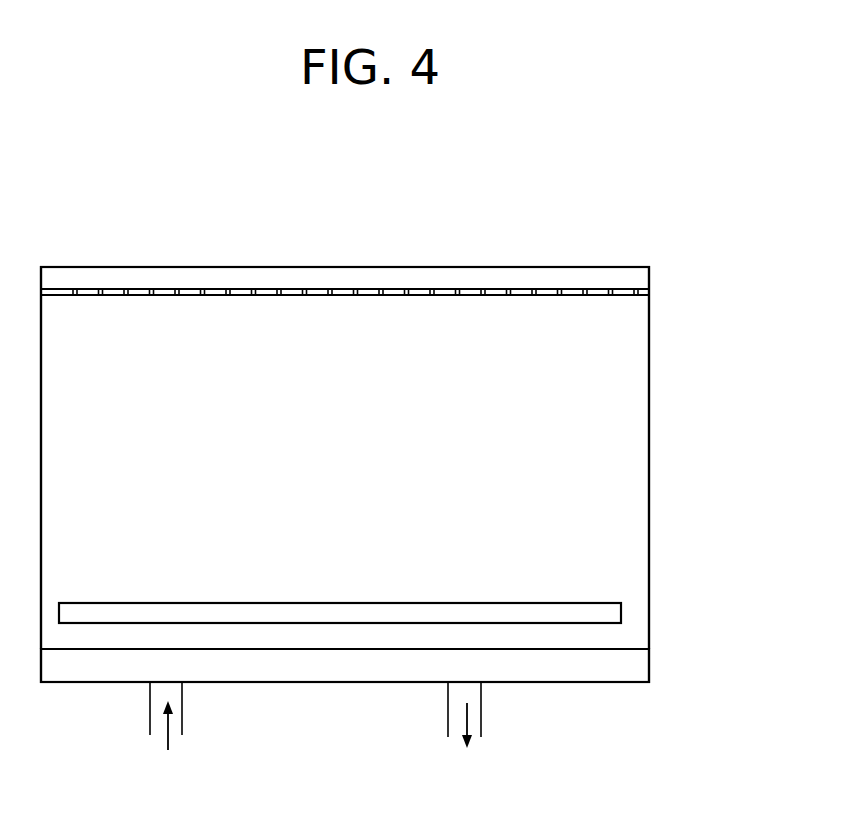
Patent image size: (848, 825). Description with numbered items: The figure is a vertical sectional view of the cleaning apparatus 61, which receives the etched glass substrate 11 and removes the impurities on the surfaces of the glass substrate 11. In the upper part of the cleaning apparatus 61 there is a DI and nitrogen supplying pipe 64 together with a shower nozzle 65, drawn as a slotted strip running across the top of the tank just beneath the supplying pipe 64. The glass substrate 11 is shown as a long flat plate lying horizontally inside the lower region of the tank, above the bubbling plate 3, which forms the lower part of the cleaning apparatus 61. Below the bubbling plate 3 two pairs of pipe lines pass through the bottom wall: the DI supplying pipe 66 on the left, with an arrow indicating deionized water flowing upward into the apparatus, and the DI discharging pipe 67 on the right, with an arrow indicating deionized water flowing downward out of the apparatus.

The cleaning apparatus 61 is at (566, 249).
The DI and N2 supplying pipe 64 is at (638, 278).
The shower nozzle 65 is at (649, 292).
The glass substrate 11 is at (600, 621).
The bubbling plate 3 is at (630, 669).
The DI supplying pipe 66 is at (157, 698).
The DI discharging pipe 67 is at (477, 698).